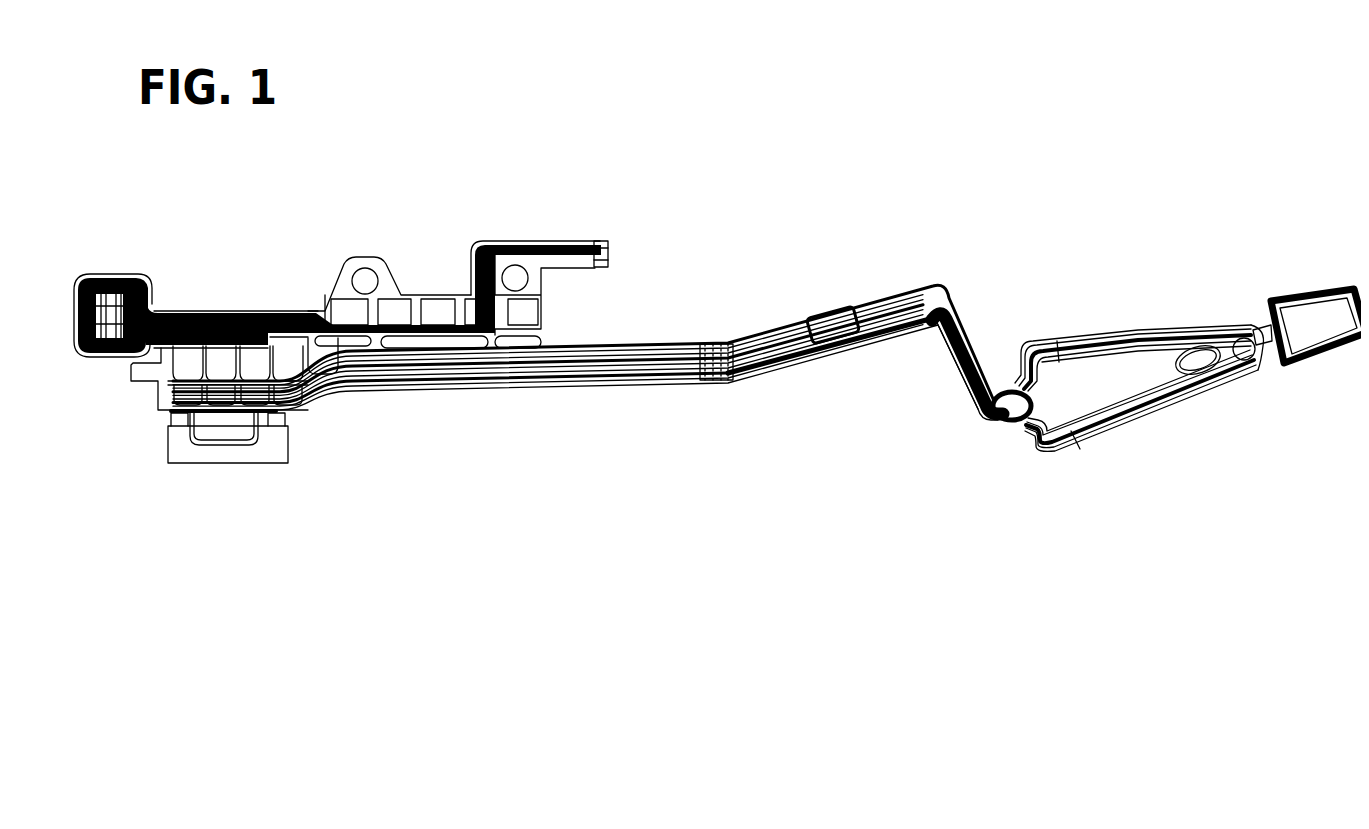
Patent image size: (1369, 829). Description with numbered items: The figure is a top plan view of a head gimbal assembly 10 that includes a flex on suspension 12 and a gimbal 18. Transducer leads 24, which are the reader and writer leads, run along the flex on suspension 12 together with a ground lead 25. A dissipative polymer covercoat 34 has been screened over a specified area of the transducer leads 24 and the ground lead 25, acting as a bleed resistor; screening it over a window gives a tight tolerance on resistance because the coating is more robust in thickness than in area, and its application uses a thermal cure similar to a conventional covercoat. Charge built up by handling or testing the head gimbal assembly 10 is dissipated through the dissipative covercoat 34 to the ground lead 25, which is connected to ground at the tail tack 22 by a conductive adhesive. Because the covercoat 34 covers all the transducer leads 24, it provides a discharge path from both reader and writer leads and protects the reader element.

The head gimbal assembly 10 is at (979, 158).
The flex on suspension 12 is at (934, 279).
The gimbal 18 is at (1306, 353).
The tail tack 22 is at (831, 308).
The transducer leads 24 is at (661, 350).
The ground lead 25 is at (604, 337).
The dissipative polymer covercoat 34 is at (706, 372).